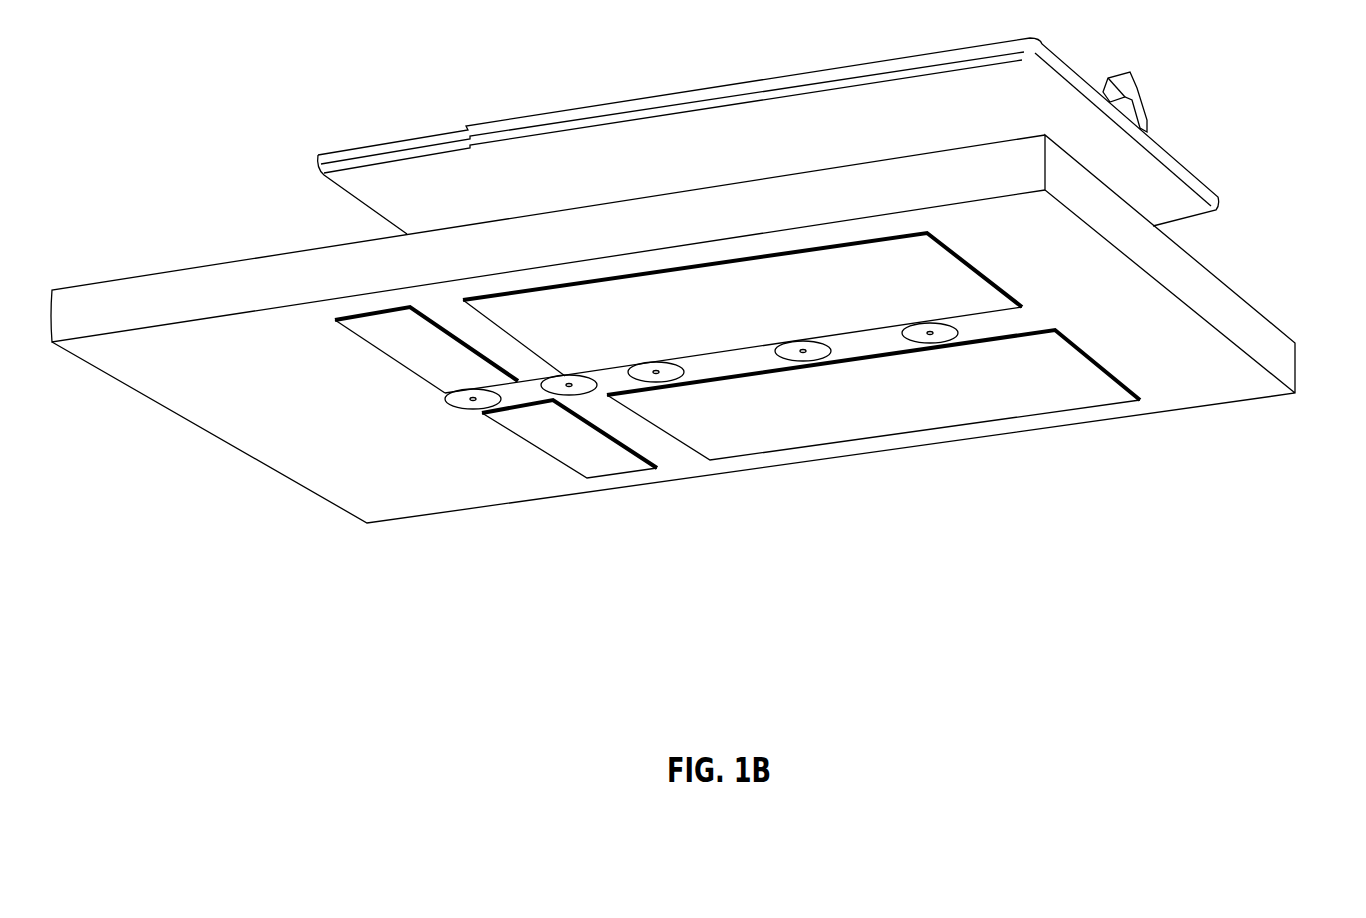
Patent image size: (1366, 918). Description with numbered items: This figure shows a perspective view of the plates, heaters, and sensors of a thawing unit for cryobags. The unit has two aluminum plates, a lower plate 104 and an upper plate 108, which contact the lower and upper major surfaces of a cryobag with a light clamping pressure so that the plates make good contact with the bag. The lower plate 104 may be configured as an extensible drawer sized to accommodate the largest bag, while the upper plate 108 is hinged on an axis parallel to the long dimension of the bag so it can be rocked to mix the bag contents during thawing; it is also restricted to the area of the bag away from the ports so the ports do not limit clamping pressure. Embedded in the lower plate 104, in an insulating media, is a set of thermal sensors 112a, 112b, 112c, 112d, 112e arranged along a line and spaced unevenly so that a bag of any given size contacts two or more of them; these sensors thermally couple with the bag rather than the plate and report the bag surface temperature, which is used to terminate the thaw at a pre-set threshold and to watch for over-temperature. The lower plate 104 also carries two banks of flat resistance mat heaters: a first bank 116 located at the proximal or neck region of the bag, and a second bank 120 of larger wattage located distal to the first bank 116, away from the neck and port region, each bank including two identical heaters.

The lower plate 104 is at (1215, 292).
The upper plate 108 is at (1163, 156).
The thermal sensor 112a is at (474, 399).
The thermal sensor 112b is at (569, 386).
The thermal sensor 112c is at (655, 372).
The thermal sensor 112d is at (803, 352).
The thermal sensor 112e is at (930, 333).
The first bank of heaters 116 is at (400, 350).
The second bank of heaters 120 is at (708, 345).